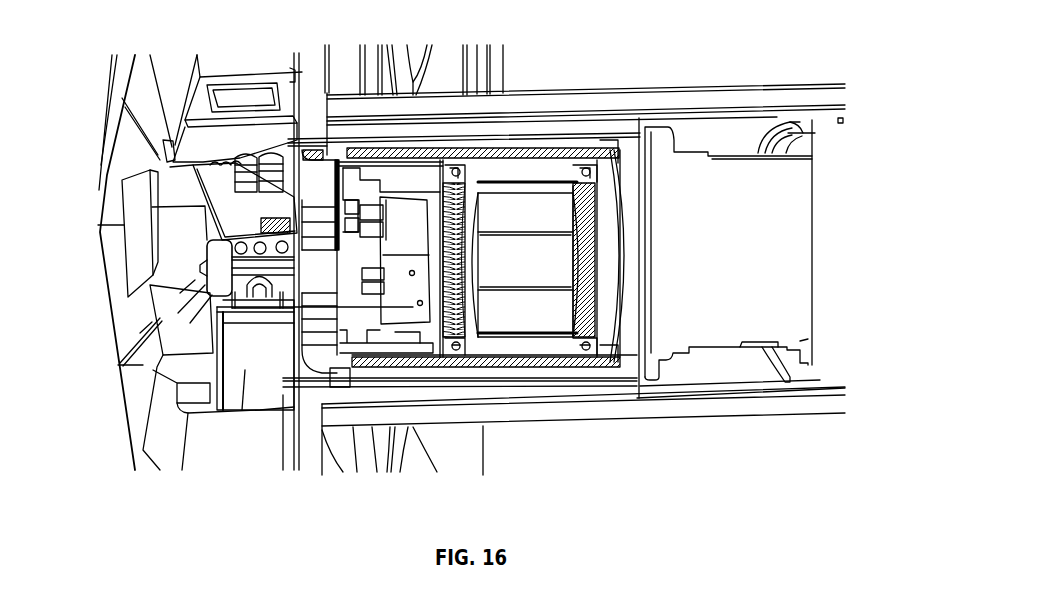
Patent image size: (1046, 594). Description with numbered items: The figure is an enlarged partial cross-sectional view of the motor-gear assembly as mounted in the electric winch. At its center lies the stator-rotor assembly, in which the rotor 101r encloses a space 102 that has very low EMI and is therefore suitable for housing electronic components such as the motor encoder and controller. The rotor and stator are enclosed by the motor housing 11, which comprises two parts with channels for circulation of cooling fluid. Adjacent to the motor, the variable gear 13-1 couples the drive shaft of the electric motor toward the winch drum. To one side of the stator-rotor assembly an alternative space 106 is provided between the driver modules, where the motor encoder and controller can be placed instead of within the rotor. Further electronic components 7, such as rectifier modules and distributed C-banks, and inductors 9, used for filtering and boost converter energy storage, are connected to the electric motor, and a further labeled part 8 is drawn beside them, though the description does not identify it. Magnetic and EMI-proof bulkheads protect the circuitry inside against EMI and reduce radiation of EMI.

The electronic components 7 is at (225, 203).
The circuit board with capacitors 8 is at (166, 250).
The inductors 9 is at (170, 76).
The motor housing 11 is at (563, 375).
The variable gear 13-1 is at (743, 240).
The rotor 101r is at (550, 222).
The space 102 is at (545, 269).
The alternative space 106 is at (400, 246).